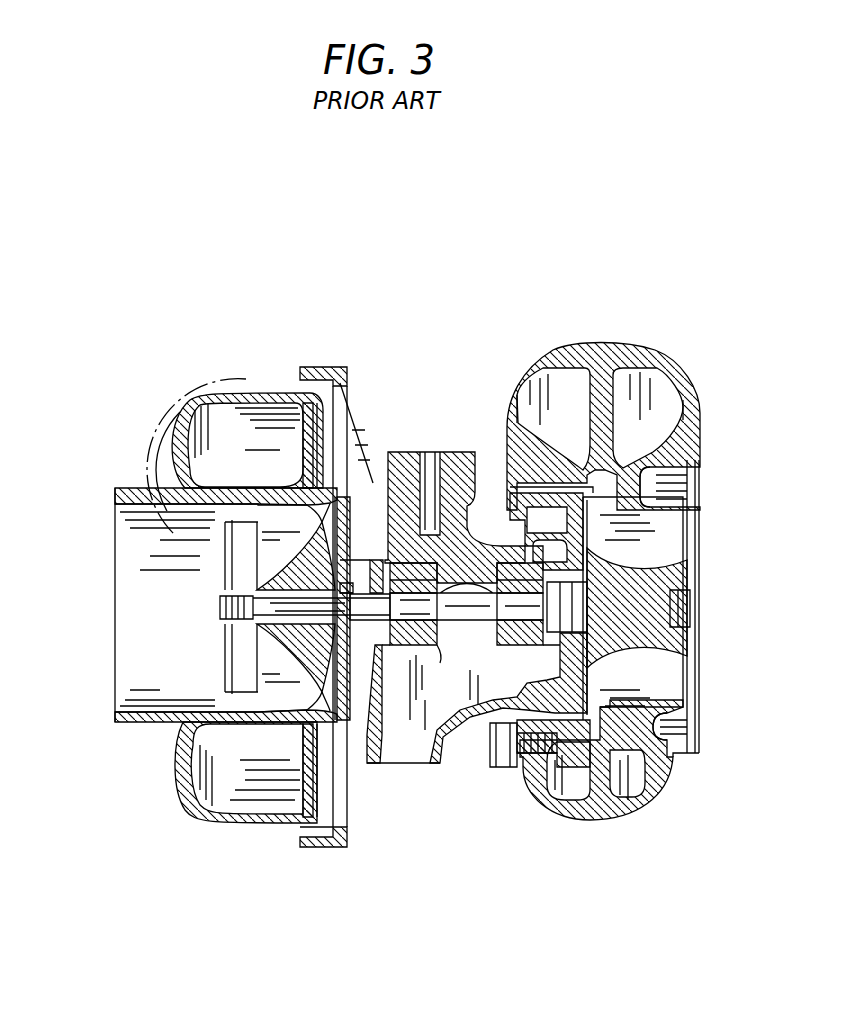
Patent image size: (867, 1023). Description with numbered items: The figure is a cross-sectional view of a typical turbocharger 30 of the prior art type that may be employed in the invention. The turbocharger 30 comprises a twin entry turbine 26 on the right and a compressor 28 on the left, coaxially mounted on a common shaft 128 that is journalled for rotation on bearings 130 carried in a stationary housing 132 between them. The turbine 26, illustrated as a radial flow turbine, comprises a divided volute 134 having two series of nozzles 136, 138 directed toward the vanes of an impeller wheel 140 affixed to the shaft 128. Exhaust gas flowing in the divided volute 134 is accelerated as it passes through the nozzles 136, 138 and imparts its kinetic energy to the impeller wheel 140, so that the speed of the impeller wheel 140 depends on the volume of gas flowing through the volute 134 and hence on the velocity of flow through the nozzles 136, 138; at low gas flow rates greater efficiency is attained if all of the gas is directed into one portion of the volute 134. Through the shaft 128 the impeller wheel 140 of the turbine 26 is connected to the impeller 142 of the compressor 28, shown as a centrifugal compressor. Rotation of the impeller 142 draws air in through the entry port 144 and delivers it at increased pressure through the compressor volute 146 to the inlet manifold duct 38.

The twin entry turbine 26 is at (671, 340).
The compressor 28 is at (231, 831).
The turbocharger 30 is at (415, 793).
The inlet manifold duct 38 is at (196, 392).
The shaft 128 is at (452, 622).
The bearings 130 is at (505, 648).
The stationary housing 132 is at (466, 436).
The divided volute 134 is at (688, 390).
The nozzles 136 is at (578, 466).
The nozzles 138 is at (618, 466).
The impeller wheel 140 is at (660, 567).
The impeller 142 is at (263, 630).
The entry port 144 is at (116, 688).
The compressor volute 146 is at (216, 822).